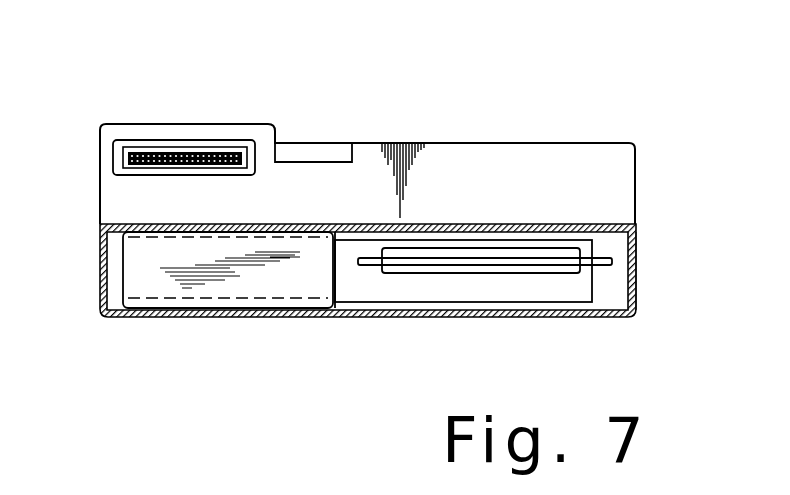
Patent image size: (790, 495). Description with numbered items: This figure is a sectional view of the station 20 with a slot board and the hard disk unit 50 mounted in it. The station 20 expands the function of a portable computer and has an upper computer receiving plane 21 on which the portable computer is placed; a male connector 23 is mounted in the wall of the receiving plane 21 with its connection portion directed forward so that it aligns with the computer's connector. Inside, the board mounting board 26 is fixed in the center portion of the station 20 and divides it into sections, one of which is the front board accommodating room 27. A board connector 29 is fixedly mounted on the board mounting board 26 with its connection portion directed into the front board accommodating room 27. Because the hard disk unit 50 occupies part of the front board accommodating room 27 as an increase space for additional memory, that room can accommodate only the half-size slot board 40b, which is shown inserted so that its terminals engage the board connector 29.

The station 20 is at (525, 124).
The computer receiving plane 21 is at (458, 218).
The male connector 23 is at (202, 155).
The board mounting board 26 is at (378, 285).
The front board accommodating room 27 is at (622, 284).
The board connector 29 is at (535, 267).
The half-size slot board 40b is at (458, 262).
The hard disk unit 50 is at (272, 290).